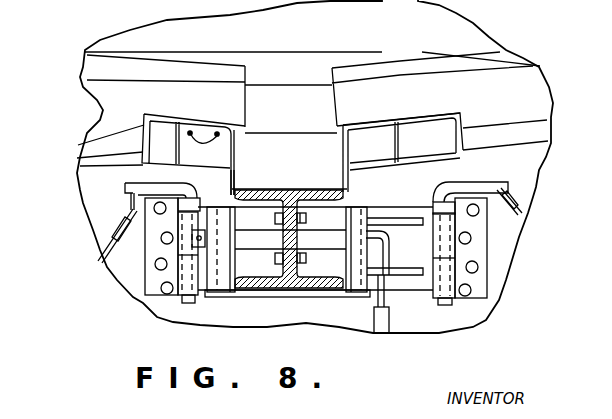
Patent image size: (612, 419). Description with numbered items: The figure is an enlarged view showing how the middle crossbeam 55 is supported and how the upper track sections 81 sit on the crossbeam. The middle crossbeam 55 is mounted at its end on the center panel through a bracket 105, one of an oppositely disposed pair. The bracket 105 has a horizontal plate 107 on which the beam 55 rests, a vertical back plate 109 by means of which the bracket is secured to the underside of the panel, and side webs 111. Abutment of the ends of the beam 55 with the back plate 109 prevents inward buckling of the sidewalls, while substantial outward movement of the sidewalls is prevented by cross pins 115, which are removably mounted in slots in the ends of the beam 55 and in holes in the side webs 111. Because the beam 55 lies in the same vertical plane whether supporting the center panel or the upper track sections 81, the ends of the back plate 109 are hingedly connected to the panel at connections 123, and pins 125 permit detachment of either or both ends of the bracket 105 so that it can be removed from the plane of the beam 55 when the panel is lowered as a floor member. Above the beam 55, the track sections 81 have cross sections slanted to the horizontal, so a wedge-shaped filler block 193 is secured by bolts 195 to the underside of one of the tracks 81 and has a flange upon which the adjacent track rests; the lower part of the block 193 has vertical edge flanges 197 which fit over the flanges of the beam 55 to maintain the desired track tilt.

The upper track section 81 is at (96, 62).
The wedge-shaped filler block 193 is at (233, 168).
The bolt 195 is at (217, 136).
The vertical edge flange 197 is at (232, 180).
The cross pin 115 is at (307, 237).
The middle crossbeam 55 is at (316, 286).
The bracket 105 is at (238, 298).
The horizontal plate 107 is at (265, 298).
The side web 111 is at (374, 212).
The vertical back plate 109 is at (162, 297).
The hinged connection 123 is at (193, 236).
The pin 125 is at (143, 181).